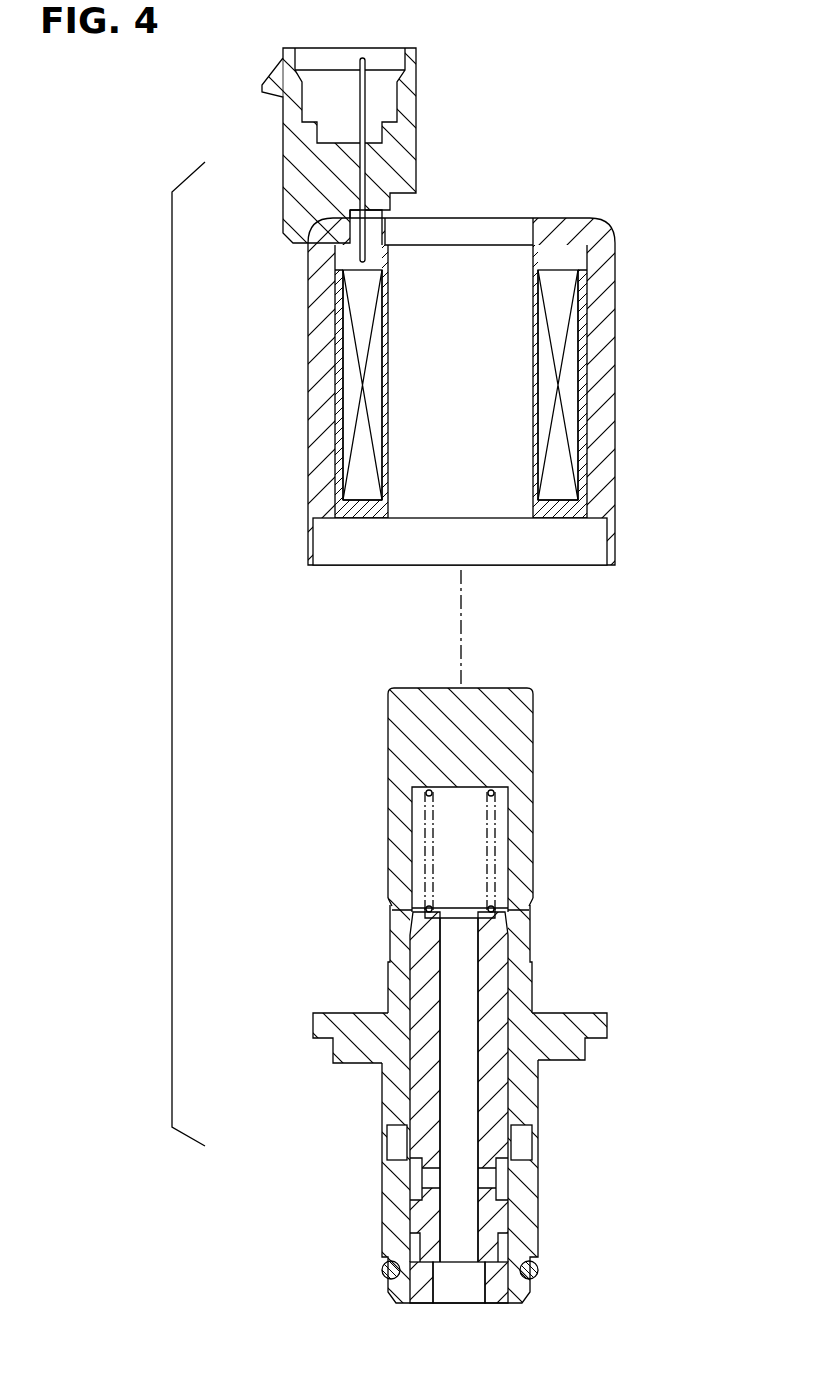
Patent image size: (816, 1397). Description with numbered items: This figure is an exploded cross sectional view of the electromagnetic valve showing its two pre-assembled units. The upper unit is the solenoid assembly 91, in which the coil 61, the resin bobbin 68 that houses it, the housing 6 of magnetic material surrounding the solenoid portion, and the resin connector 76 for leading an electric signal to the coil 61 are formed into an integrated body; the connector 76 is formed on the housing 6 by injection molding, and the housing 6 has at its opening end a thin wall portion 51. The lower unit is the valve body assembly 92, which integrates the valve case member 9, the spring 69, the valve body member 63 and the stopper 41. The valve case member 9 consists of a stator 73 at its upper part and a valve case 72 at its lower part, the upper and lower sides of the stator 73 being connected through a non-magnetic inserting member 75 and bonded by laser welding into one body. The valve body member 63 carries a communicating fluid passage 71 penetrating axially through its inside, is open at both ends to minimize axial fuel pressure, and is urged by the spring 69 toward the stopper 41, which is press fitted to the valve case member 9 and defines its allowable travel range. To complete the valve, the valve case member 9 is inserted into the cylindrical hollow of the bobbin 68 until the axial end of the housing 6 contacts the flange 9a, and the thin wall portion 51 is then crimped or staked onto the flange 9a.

The solenoid assembly 91 is at (659, 193).
The valve body assembly 92 is at (604, 773).
The connector 76 is at (416, 117).
The bobbin 68 is at (587, 255).
The coil 61 is at (578, 350).
The housing 6 is at (610, 441).
The thin wall portion 51 is at (308, 540).
The stator 73 is at (528, 737).
The spring 69 is at (494, 836).
The inserting member 75 is at (518, 930).
The valve case member 9 is at (519, 1000).
The flange 9a is at (607, 1018).
The valve case 72 is at (540, 1078).
The valve body member 63 is at (497, 1108).
The communicating fluid passage 71 is at (472, 1218).
The stopper 41 is at (530, 1290).